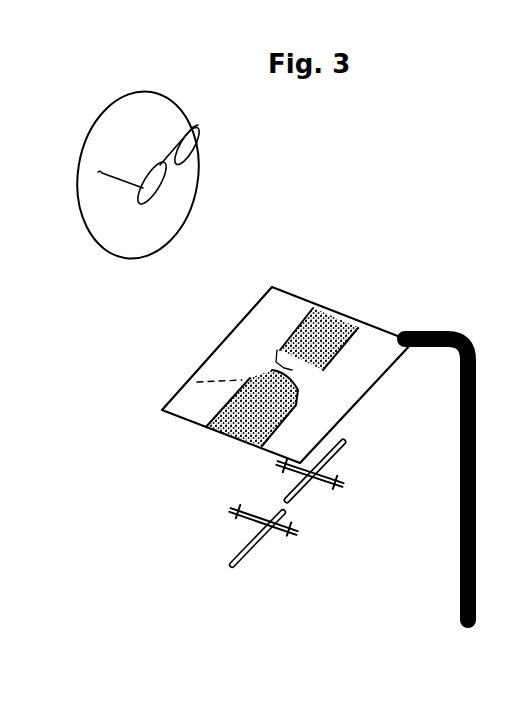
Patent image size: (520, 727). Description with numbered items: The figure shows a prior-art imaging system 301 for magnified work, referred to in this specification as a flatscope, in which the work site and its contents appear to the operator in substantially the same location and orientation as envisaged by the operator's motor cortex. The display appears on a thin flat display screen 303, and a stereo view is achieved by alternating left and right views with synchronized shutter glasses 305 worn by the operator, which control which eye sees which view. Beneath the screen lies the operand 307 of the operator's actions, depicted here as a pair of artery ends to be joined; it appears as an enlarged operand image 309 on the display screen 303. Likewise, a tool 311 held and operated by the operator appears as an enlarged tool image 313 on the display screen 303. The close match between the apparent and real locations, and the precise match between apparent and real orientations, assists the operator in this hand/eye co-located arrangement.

The imaging system 301 is at (335, 210).
The display screen 303 is at (303, 297).
The shutter glasses 305 is at (197, 126).
The operand 307 is at (305, 510).
The operand image 309 is at (252, 427).
The tool 311 is at (275, 503).
The tool image 313 is at (205, 376).